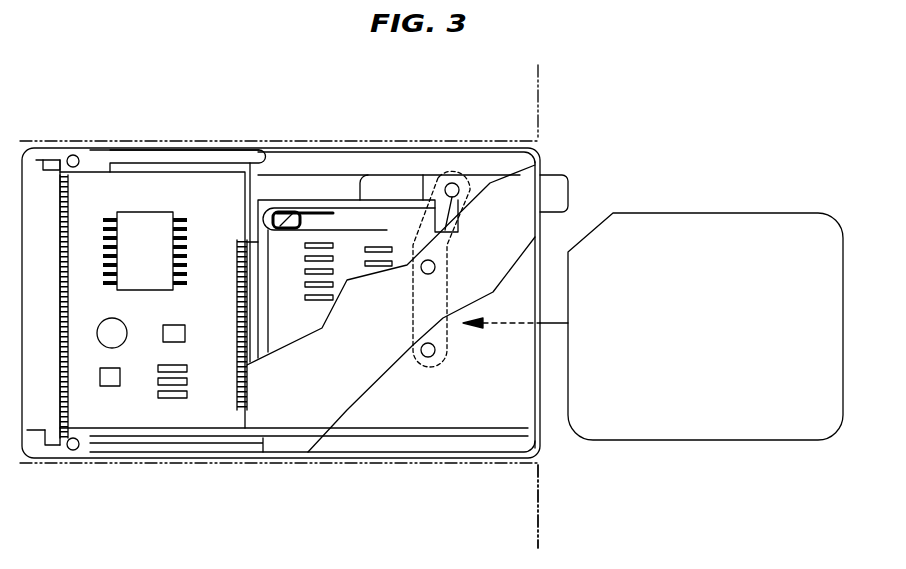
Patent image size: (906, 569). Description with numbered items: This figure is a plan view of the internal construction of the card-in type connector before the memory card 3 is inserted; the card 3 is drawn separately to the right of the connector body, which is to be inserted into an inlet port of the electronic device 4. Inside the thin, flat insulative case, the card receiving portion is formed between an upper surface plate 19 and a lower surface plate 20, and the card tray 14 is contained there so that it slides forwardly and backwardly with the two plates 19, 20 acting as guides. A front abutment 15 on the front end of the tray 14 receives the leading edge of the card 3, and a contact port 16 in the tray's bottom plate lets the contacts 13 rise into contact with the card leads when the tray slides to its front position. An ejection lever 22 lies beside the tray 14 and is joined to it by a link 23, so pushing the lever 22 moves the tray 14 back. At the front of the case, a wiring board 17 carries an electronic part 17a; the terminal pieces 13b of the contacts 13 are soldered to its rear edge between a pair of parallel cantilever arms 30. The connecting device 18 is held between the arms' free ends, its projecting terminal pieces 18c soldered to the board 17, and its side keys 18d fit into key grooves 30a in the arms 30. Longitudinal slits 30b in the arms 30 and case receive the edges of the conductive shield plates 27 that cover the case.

The memory card 3 is at (712, 227).
The electronic device 4 is at (538, 512).
The contacts 13 is at (328, 247).
The terminal pieces 13b is at (232, 408).
The card tray 14 is at (282, 247).
The front abutment 15 is at (263, 235).
The contact port 16 is at (302, 248).
The wiring board 17 is at (123, 178).
The electronic part 17a is at (155, 263).
The connecting device 18 is at (38, 185).
The projecting terminal pieces 18c is at (68, 395).
The keys 18d is at (48, 432).
The upper surface plate 19 is at (333, 403).
The lower surface plate 20 is at (463, 160).
The ejection lever 22 is at (560, 190).
The link 23 is at (423, 178).
The shield plates 27 is at (433, 417).
The cantilever arms 30 is at (152, 156).
The key grooves 30a is at (50, 162).
The slits 30b is at (195, 149).